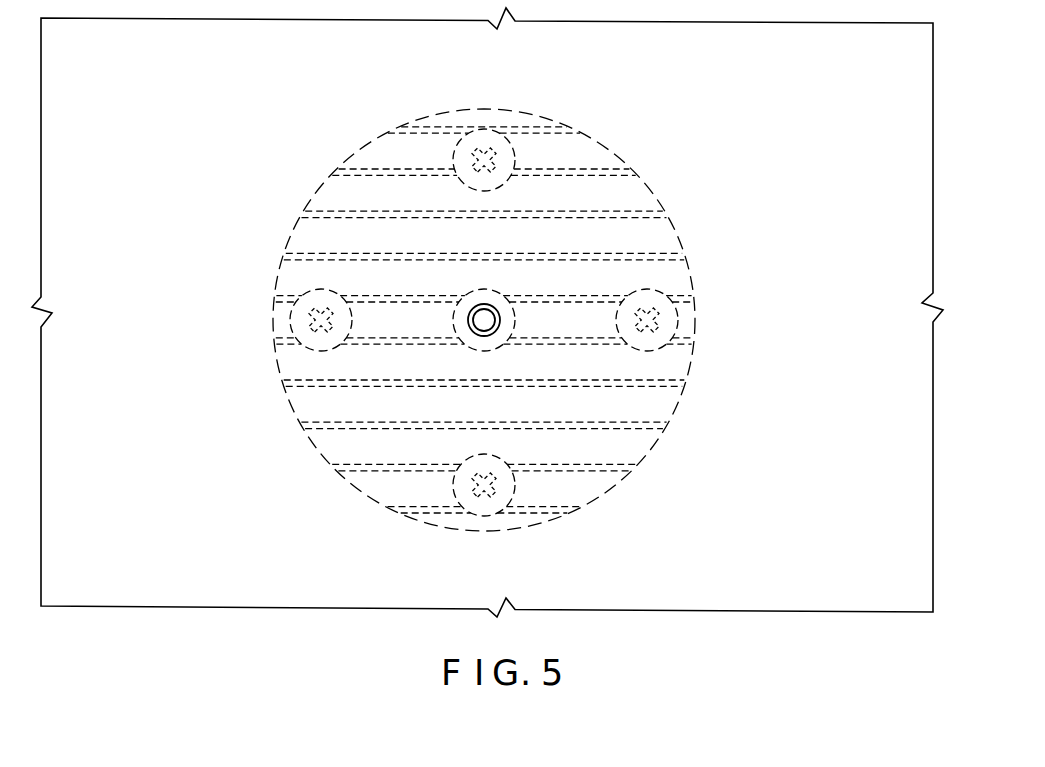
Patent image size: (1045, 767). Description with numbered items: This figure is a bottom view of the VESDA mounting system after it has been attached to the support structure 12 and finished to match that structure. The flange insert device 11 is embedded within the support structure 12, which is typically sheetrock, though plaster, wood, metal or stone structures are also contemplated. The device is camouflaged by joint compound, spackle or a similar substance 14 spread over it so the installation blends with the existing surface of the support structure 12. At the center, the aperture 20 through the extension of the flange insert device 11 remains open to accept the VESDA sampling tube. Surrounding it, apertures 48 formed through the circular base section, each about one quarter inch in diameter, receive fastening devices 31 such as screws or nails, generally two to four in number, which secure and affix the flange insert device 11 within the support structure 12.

The flange insert device 11 is at (313, 190).
The support structure 12 is at (791, 460).
The joint compound, spackle or similar substance 14 is at (315, 398).
The aperture 20 is at (493, 310).
The fastening devices 31 is at (657, 322).
The apertures 48 is at (508, 160).